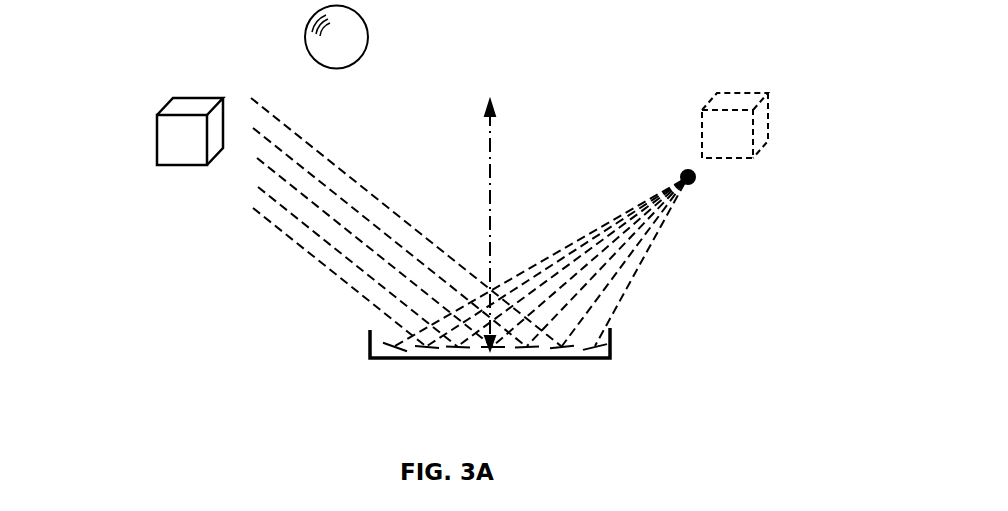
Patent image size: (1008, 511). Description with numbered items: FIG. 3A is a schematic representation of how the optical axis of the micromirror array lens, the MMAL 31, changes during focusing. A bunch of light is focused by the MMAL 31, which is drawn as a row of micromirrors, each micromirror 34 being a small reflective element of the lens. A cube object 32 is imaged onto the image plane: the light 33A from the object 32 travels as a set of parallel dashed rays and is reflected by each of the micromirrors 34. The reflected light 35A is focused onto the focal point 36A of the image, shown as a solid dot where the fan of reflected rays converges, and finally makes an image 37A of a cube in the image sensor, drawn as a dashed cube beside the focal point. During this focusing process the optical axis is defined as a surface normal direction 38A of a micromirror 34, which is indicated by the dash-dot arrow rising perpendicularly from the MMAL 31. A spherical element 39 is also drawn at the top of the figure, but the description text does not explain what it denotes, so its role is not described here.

The MMAL 31 is at (362, 345).
The cube object 32 is at (153, 142).
The light 33A is at (287, 248).
The micromirror 34 is at (610, 358).
The reflected light 35A is at (637, 277).
The focal point 36A is at (697, 185).
The image 37A is at (770, 118).
The surface normal direction 38A is at (497, 148).
The viewer / light source sphere 39 is at (368, 32).